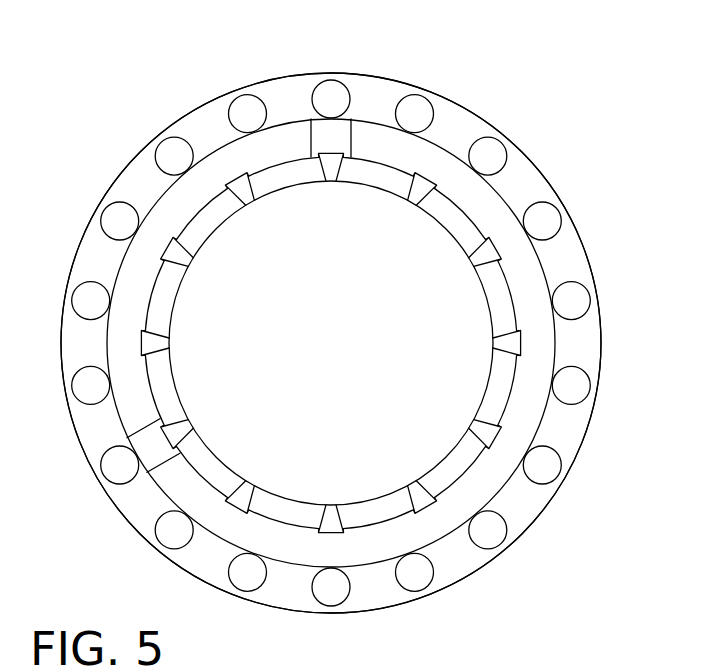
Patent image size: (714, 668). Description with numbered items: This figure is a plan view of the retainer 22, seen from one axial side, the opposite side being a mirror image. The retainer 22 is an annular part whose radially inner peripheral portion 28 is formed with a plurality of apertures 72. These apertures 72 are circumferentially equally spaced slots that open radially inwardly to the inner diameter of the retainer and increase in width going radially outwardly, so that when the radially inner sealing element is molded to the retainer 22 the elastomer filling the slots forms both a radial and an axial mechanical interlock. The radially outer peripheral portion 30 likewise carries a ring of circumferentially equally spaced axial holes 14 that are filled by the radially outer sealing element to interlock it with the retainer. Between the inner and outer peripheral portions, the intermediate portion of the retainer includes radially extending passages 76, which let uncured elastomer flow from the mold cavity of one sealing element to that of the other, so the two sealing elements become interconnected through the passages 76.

The retainer 22 is at (548, 158).
The radially outer peripheral portion 30 is at (460, 108).
The bolt holes 14 is at (576, 390).
The radially inner peripheral portion 28 is at (487, 303).
The apertures 72 is at (248, 195).
The radially extending passages 76 is at (327, 133).